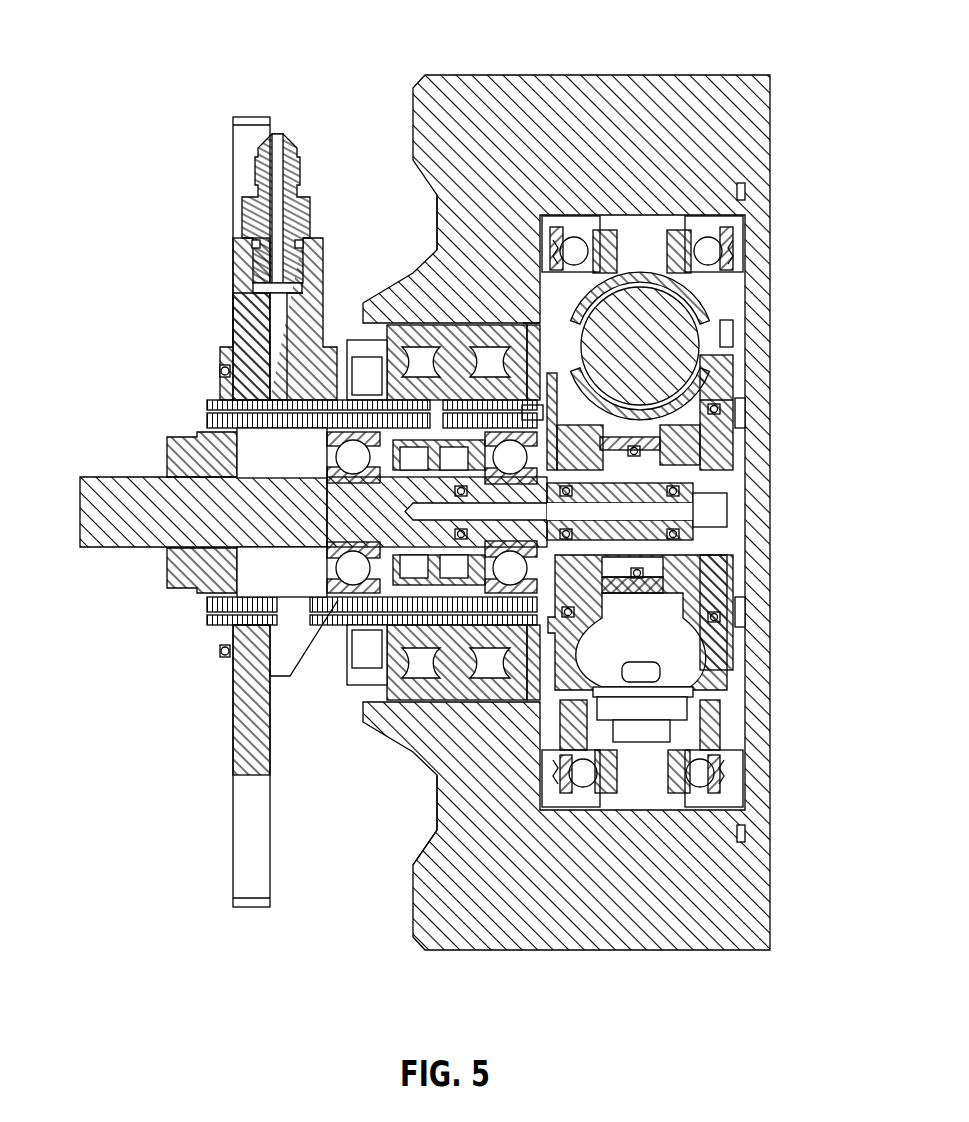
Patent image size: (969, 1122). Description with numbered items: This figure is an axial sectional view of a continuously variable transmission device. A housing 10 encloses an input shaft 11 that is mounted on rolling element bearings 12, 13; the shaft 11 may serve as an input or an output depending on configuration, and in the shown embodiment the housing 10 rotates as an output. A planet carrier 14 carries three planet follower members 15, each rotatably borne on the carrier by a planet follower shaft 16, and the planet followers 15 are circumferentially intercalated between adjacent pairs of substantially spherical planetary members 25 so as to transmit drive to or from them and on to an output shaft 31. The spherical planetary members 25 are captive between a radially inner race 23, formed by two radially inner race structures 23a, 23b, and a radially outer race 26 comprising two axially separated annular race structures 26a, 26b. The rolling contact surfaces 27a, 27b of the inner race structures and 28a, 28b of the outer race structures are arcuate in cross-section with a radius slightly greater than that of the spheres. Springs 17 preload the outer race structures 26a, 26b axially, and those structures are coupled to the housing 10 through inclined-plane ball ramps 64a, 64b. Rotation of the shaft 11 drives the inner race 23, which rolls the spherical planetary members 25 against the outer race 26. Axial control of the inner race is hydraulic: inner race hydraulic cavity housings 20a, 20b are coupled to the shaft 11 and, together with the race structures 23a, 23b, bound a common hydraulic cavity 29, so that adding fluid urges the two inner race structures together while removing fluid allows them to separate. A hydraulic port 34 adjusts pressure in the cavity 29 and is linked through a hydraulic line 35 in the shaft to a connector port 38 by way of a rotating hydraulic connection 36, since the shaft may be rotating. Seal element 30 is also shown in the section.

The housing 10 is at (765, 186).
The input shaft 11 is at (190, 480).
The rolling element bearing 12 is at (510, 575).
The rolling element bearing 13 is at (335, 572).
The planet carrier 14 is at (433, 236).
The planet follower member 15 is at (650, 668).
The planet follower shaft 16 is at (433, 838).
The spring 17 is at (551, 246).
The inner race hydraulic cavity housing 20a is at (440, 425).
The inner race hydraulic cavity housing 20b is at (605, 458).
The radially inner race 23 is at (700, 440).
The radially inner race structure 23a is at (550, 375).
The radially inner race structure 23b is at (725, 365).
The spherical planetary member 25 is at (665, 345).
The radially outer race 26 is at (640, 272).
The radially outer race structure 26a is at (560, 240).
The radially outer race structure 26b is at (705, 300).
The rolling contact surface 27a is at (527, 325).
The rolling contact surface 27b is at (720, 405).
The rolling contact surface 28a is at (560, 266).
The rolling contact surface 28b is at (722, 272).
The hydraulic cavity 29 is at (740, 412).
The seal ring 30 is at (530, 410).
The output shaft 31 is at (225, 605).
The hydraulic port 34 is at (722, 512).
The hydraulic line 35 is at (340, 468).
The rotating hydraulic connection 36 is at (405, 512).
The connector port 38 is at (255, 168).
The ball ramp 64a is at (587, 253).
The ball ramp 64b is at (695, 253).